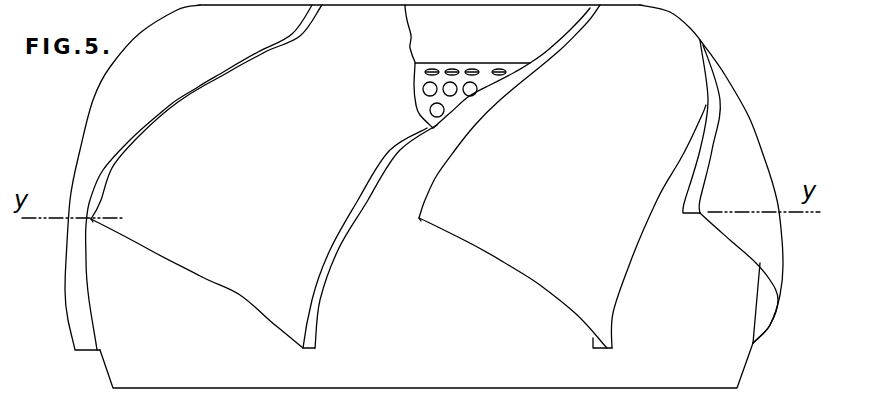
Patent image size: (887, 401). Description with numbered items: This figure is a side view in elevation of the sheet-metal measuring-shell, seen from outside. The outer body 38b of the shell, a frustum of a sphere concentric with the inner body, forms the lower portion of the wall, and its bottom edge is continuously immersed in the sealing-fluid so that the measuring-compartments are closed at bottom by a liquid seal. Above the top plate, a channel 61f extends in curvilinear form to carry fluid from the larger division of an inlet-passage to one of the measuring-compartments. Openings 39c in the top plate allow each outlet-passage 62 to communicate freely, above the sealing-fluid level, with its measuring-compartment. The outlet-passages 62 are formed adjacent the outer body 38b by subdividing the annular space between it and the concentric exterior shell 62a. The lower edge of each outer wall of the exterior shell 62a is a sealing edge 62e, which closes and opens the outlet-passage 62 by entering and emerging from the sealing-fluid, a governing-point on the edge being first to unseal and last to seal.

The channel 61f is at (467, 34).
The openings 39c is at (423, 89).
The exterior shell 62a is at (793, 260).
The sealing edge 62e is at (92, 225).
The outlet-passage 62 is at (739, 278).
The outer body 38b is at (426, 364).